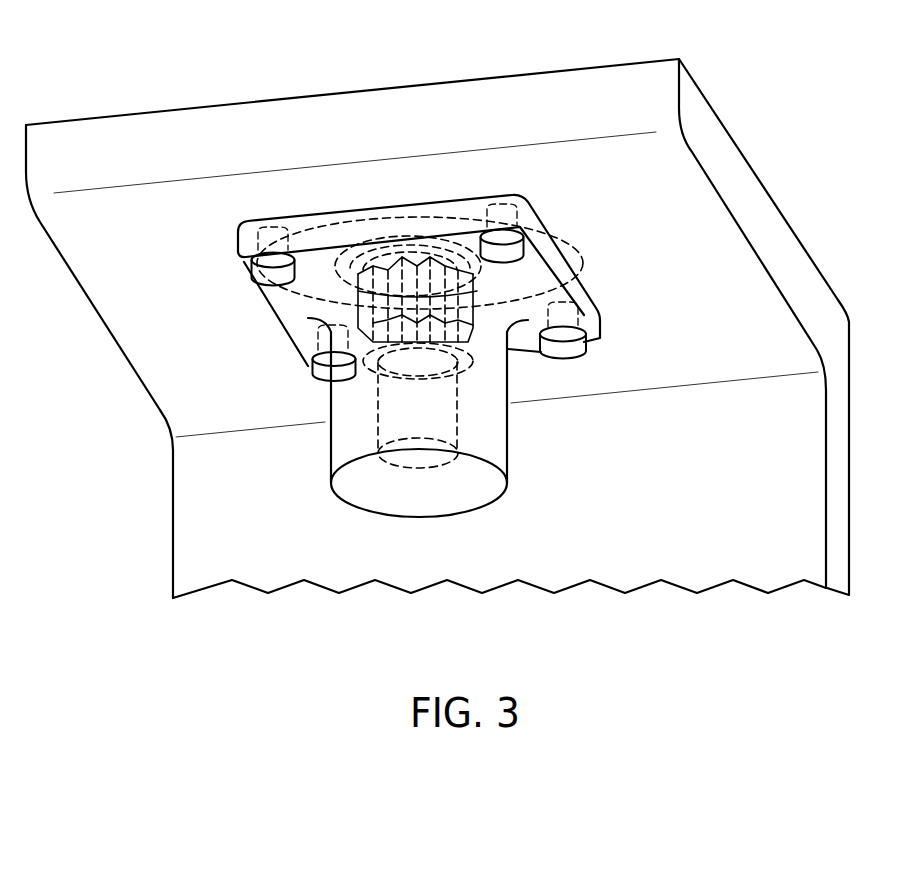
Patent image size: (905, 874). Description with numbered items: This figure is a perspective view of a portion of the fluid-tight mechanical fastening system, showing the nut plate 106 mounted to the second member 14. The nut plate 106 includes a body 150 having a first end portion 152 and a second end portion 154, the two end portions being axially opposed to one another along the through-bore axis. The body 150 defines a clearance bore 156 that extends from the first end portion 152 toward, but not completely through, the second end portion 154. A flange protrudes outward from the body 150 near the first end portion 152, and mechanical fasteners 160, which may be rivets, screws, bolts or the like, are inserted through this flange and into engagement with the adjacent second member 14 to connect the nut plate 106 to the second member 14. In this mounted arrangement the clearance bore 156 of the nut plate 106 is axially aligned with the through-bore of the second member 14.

The second member 14 is at (624, 74).
The nut plate 106 is at (450, 417).
The body 150 is at (508, 487).
The first end portion 152 is at (488, 190).
The second end portion 154 is at (386, 362).
The clearance bore 156 is at (458, 415).
The mechanical fasteners 160 is at (257, 263).